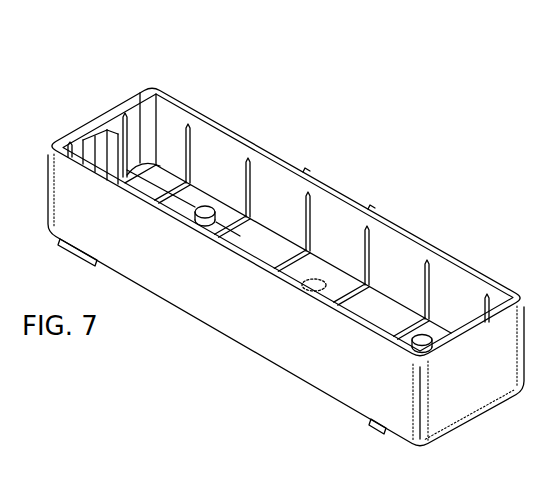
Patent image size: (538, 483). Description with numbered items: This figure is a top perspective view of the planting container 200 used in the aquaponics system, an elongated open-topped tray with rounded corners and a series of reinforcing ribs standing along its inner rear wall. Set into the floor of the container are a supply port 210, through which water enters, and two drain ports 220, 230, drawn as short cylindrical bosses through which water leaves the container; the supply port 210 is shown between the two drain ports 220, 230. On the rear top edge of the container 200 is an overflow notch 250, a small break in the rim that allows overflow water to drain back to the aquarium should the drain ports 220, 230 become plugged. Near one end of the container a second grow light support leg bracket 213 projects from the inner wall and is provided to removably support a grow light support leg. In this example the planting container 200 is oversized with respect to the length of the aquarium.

The planting container 200 is at (286, 267).
The supply port 210 is at (315, 282).
The second grow light support leg bracket 213 is at (102, 123).
The drain port 220 is at (208, 197).
The drain port 230 is at (427, 327).
The overflow notch 250 is at (340, 188).